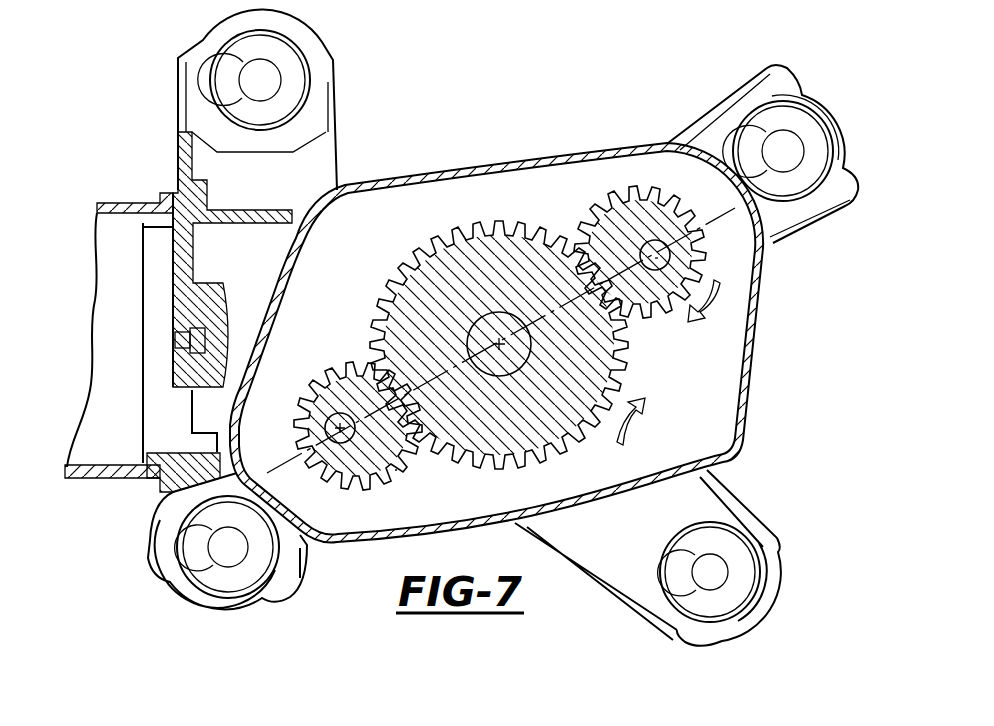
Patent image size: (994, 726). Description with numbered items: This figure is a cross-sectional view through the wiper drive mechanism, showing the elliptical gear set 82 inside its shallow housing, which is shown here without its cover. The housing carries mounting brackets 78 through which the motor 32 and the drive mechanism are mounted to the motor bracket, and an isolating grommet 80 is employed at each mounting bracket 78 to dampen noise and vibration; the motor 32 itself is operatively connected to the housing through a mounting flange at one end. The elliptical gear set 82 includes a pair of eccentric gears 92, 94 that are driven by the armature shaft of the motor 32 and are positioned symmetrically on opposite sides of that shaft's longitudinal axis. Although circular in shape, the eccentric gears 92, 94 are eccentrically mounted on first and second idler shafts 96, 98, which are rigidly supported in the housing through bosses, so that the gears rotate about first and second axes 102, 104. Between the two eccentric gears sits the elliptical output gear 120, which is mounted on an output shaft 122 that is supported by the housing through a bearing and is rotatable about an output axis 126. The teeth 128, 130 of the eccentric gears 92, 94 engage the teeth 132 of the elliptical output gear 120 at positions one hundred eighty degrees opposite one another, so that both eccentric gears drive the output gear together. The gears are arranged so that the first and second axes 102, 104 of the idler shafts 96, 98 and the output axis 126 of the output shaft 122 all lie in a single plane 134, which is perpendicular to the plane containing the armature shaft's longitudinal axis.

The motor 32 is at (100, 290).
The mounting bracket 78 is at (198, 52).
The isolating grommet 80 is at (293, 87).
The elliptical gear set 82 is at (446, 180).
The eccentric gear 92 is at (345, 358).
The eccentric gear 94 is at (670, 316).
The first idler shaft 96 is at (332, 392).
The second idler shaft 98 is at (707, 270).
The first axis 102 is at (328, 470).
The second axis 104 is at (645, 250).
The elliptical output gear 120 is at (503, 330).
The output shaft 122 is at (548, 440).
The output axis 126 is at (467, 232).
The teeth 128 is at (407, 473).
The teeth 130 is at (660, 202).
The teeth 132 is at (625, 375).
The plane 134 is at (283, 475).